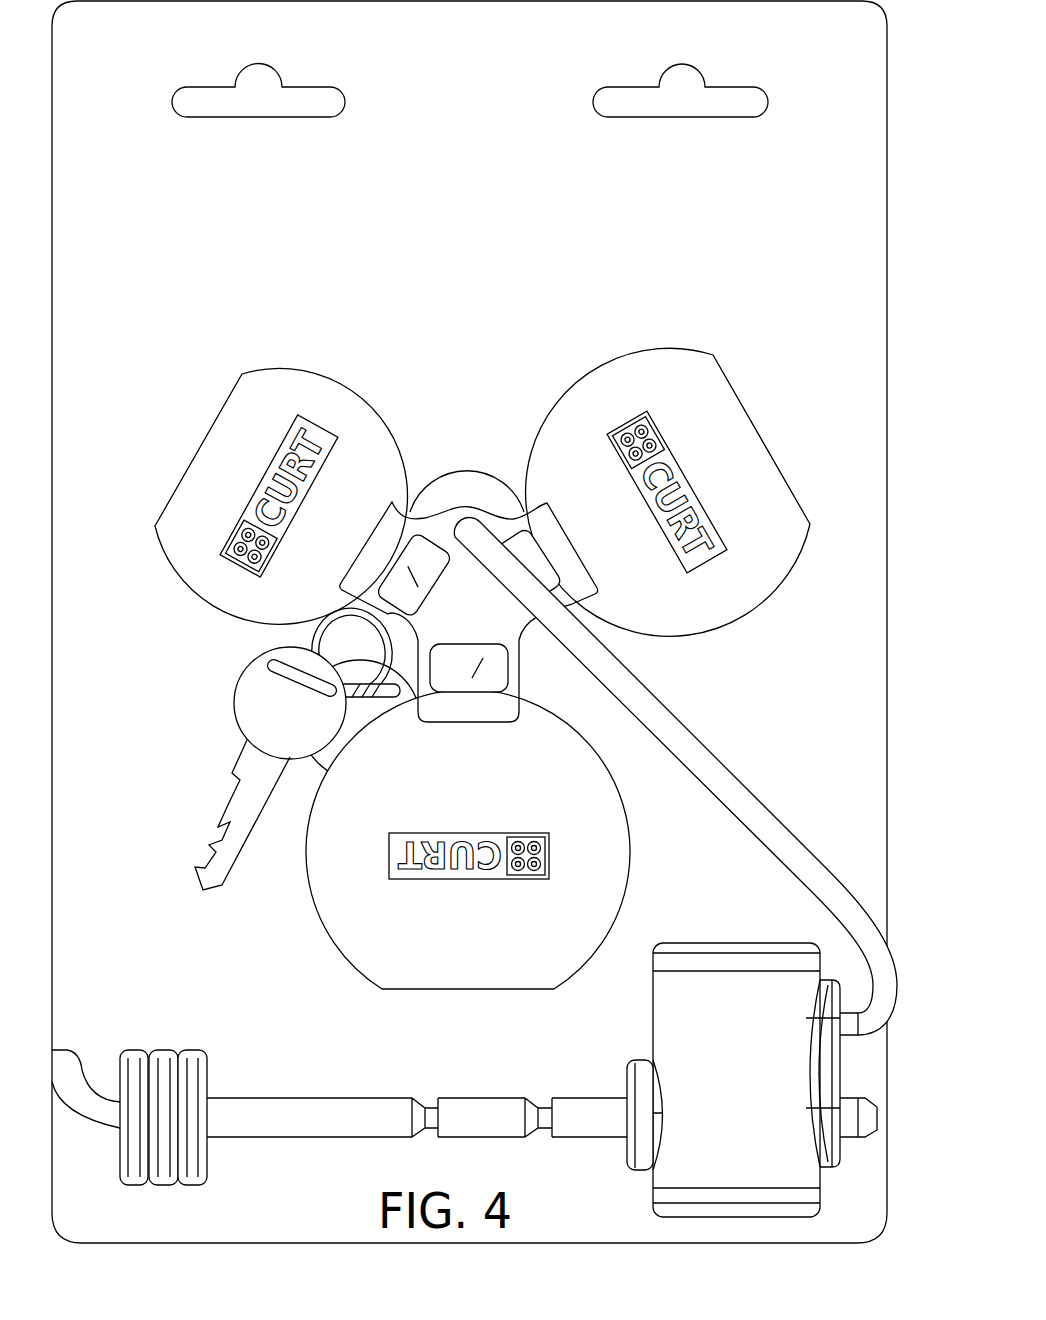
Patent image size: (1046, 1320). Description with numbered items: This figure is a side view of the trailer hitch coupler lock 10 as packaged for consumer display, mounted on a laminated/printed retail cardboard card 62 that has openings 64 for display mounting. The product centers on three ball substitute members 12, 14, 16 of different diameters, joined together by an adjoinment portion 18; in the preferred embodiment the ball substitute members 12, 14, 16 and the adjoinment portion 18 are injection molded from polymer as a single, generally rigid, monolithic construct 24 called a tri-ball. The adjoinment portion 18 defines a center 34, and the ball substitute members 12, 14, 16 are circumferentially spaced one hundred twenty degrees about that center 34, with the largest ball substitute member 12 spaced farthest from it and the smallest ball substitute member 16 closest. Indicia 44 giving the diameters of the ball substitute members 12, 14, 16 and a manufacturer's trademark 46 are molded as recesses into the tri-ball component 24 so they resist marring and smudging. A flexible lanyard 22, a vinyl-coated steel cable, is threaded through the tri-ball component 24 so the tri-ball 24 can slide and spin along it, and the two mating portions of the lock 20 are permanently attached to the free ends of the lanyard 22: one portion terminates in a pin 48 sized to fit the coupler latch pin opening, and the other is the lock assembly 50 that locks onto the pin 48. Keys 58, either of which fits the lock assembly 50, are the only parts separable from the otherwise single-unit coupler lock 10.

The trailer hitch coupler lock 10 is at (165, 272).
The ball substitute member 12 is at (343, 940).
The ball substitute member 14 is at (659, 453).
The ball substitute member 16 is at (258, 388).
The adjoinment portion 18 is at (469, 569).
The lock 20 is at (498, 1056).
The flexible lanyard 22 is at (743, 798).
The monolithic construct 24 is at (446, 481).
The center 34 is at (472, 608).
The indicia 44 is at (522, 550).
The trademark 46 is at (620, 424).
The pin 48 is at (380, 1112).
The lock assembly 50 is at (743, 943).
The keys 58 is at (250, 703).
The retail cardboard card 62 is at (876, 125).
The openings 64 is at (295, 107).